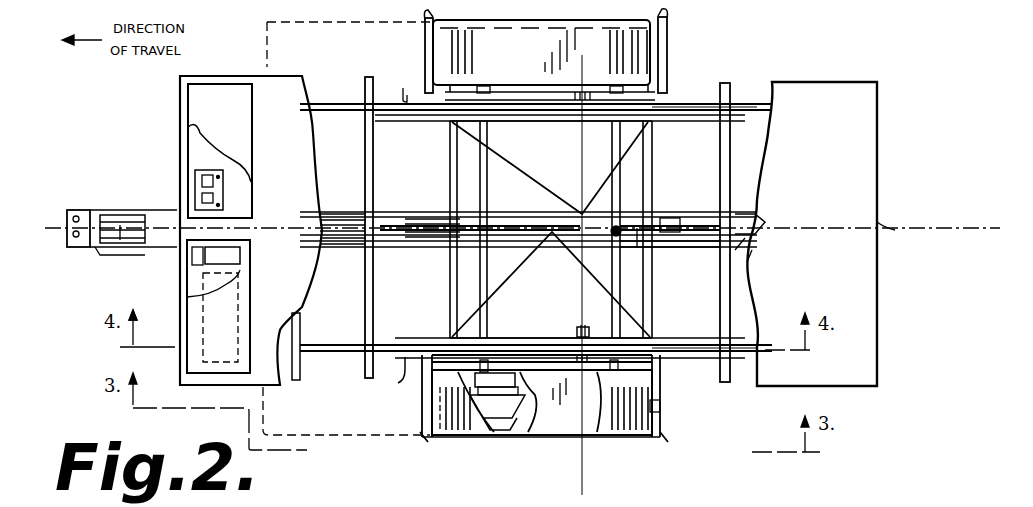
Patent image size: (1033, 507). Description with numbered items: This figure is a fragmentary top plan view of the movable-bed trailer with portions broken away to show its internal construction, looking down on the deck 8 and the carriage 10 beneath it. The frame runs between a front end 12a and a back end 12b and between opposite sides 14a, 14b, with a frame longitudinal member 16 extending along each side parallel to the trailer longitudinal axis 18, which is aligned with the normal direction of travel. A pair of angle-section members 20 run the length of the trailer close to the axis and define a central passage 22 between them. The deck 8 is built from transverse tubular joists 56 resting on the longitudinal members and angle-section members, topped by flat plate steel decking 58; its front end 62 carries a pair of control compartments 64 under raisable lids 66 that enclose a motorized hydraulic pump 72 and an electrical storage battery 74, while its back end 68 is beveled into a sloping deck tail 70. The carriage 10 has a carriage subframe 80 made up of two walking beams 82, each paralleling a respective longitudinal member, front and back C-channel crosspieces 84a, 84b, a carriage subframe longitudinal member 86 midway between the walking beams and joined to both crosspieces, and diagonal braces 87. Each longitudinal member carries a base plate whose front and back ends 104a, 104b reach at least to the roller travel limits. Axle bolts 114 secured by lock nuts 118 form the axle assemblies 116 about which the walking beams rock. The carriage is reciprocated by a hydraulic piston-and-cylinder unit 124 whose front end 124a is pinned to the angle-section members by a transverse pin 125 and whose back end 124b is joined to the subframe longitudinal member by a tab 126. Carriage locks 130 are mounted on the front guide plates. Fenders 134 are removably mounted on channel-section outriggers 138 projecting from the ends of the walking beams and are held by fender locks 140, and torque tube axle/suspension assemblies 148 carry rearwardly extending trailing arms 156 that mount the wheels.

The carriage 10 is at (665, 440).
The front end 12a is at (105, 215).
The back end 12b is at (745, 100).
The side 14a is at (690, 100).
The side 14b is at (668, 361).
The frame longitudinal member 16 is at (712, 120).
The trailer longitudinal axis 18 is at (890, 231).
The angle-section member 20 is at (765, 222).
The central passage 22 is at (678, 245).
The tubular joist 56 is at (365, 77).
The flat plate steel decking 58 is at (830, 172).
The front end 62 is at (180, 100).
The control compartment 64 is at (190, 131).
The raisable lid 66 is at (200, 84).
The back end 68 is at (880, 146).
The deck tail 70 is at (858, 261).
The motorized hydraulic pump 72 is at (240, 255).
The electrical storage battery 74 is at (225, 198).
The carriage subframe 80 is at (450, 124).
The walking beam 82 is at (503, 338).
The front C-channel crosspiece 84a is at (450, 173).
The back C-channel crosspiece 84b is at (652, 173).
The carriage subframe longitudinal member 86 is at (637, 248).
The diagonal brace 87 is at (582, 214).
The front end 104a is at (401, 93).
The back end 104b is at (672, 95).
The axle bolt 114 is at (597, 432).
The axle assembly 116 is at (582, 92).
The lock nut 118 is at (579, 330).
The carriage hydraulic piston-and-cylinder unit 124 is at (425, 220).
The front end 124a is at (97, 213).
The back end 124b is at (652, 212).
The transverse pin 125 is at (112, 250).
The tab 126 is at (612, 236).
The carriage lock 130 is at (405, 380).
The fender 134 is at (462, 440).
The channel-section outrigger 138 is at (672, 408).
The fender lock 140 is at (420, 417).
The torque tube axle/suspension assembly 148 is at (613, 153).
The trailing arm 156 is at (538, 425).
The deck 8 is at (830, 131).